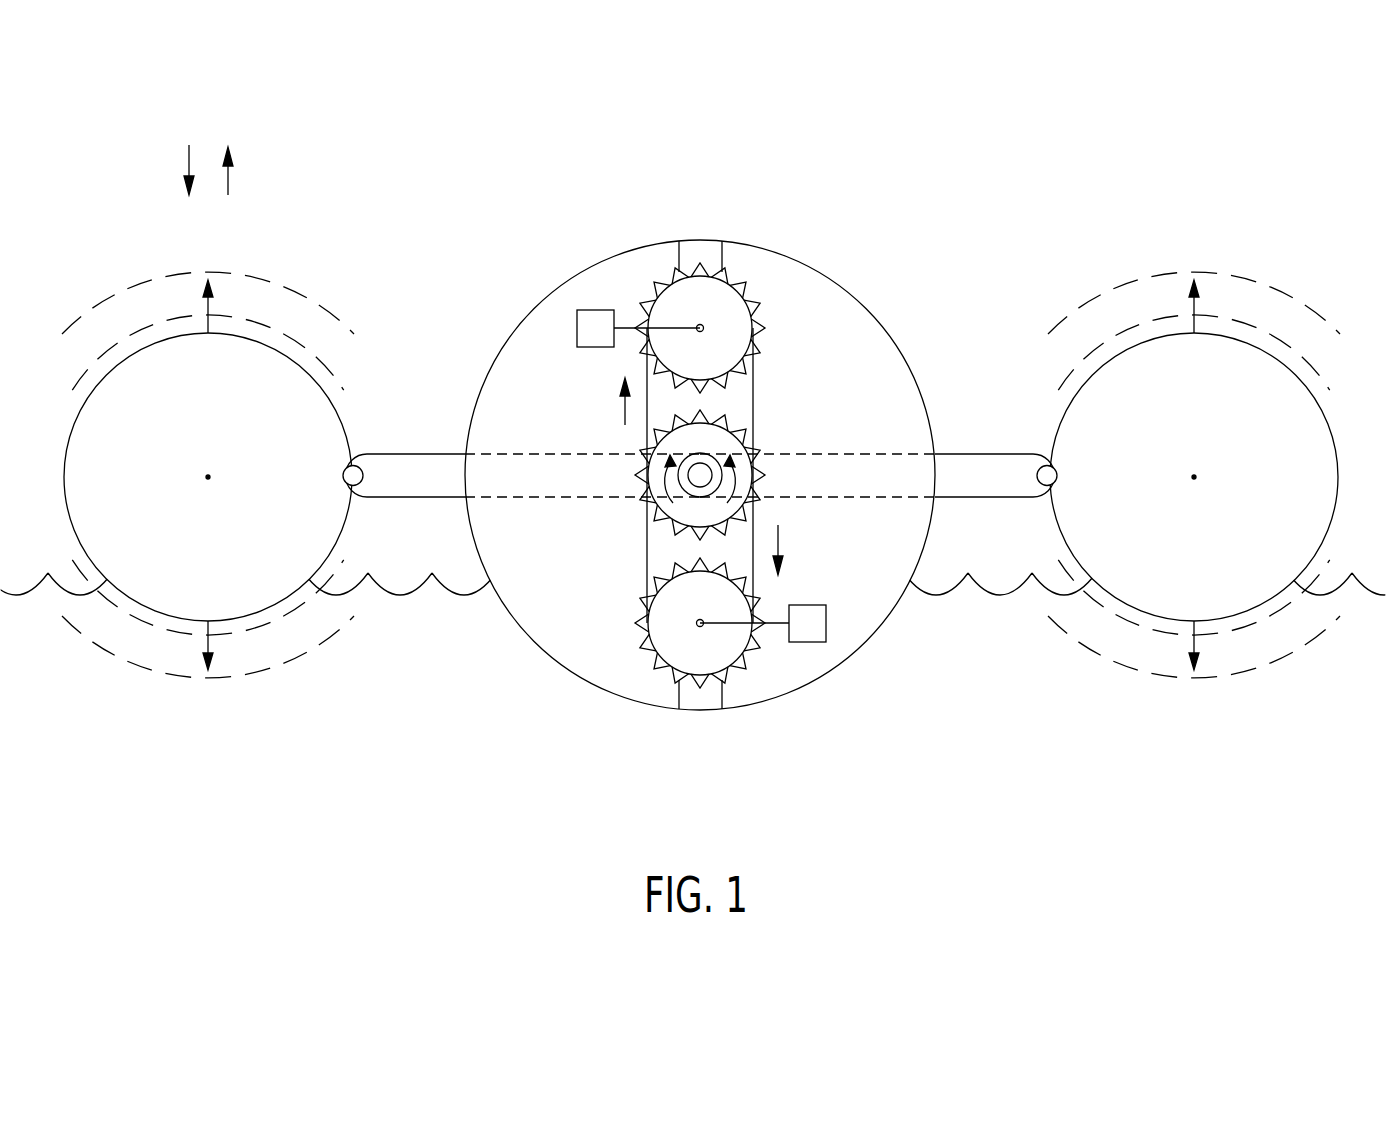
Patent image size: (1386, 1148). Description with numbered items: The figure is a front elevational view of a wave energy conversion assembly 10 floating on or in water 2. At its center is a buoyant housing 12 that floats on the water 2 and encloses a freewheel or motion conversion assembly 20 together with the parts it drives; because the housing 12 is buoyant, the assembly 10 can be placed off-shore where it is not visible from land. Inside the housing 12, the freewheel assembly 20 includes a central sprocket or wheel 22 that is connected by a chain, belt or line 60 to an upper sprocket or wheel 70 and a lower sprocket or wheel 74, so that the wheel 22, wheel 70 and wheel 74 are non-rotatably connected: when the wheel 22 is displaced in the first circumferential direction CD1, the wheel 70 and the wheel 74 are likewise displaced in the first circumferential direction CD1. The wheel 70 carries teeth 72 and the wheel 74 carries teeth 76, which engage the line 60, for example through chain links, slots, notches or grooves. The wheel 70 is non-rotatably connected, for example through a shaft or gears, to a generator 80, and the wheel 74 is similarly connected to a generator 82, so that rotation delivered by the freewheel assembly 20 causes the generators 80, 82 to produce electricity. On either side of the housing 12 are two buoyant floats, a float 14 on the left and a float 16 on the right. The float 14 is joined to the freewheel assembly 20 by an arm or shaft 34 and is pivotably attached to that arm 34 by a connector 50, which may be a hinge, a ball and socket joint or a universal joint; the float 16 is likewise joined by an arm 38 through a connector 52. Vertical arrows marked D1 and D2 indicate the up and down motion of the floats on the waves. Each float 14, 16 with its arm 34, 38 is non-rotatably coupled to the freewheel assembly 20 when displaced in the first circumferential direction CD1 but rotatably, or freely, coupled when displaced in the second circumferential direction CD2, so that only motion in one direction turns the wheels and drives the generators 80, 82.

The water 2 is at (414, 744).
The wave energy conversion assembly 10 is at (412, 169).
The housing 12 is at (543, 298).
The float 14 is at (220, 403).
The float 16 is at (1206, 403).
The freewheel assembly 20 is at (782, 429).
The wheel 22 is at (660, 505).
The arm 34 is at (412, 467).
The arm 38 is at (988, 472).
The connector 50 is at (352, 463).
The connector 52 is at (1048, 467).
The line 60 is at (757, 388).
The wheel 70 is at (737, 318).
The teeth 72 is at (742, 275).
The wheel 74 is at (667, 633).
The teeth 76 is at (665, 577).
The generator 80 is at (595, 338).
The generator 82 is at (803, 627).
The first circumferential direction CD1 is at (640, 453).
The second circumferential direction CD2 is at (737, 478).
The upward direction D1 is at (232, 186).
The downward direction D2 is at (186, 166).